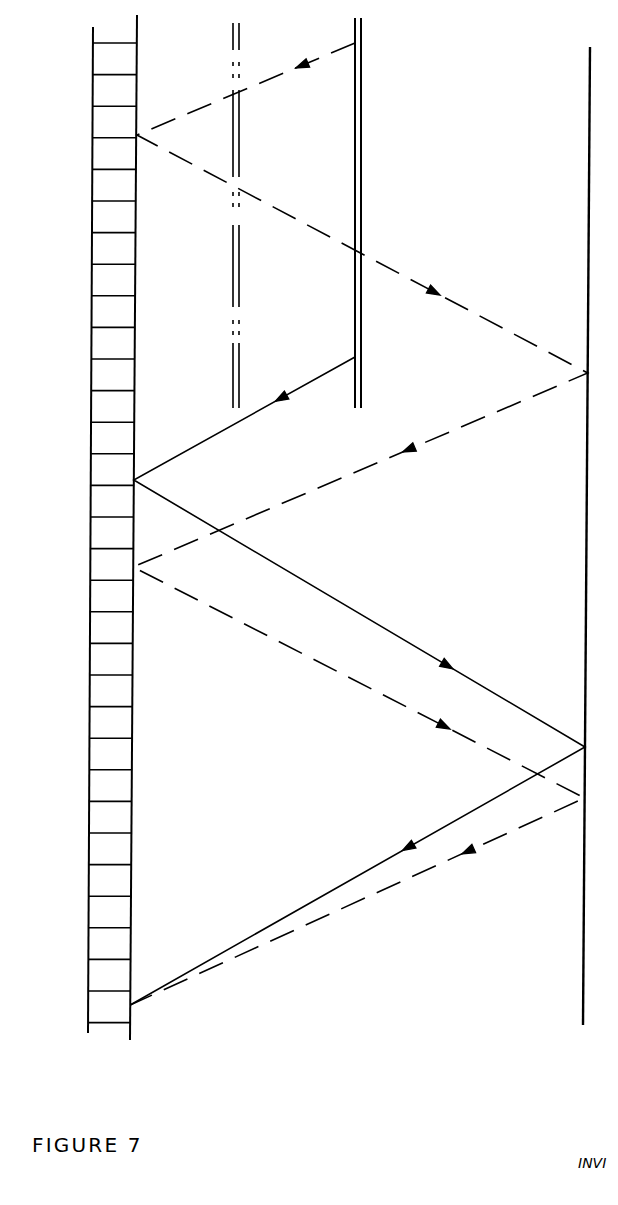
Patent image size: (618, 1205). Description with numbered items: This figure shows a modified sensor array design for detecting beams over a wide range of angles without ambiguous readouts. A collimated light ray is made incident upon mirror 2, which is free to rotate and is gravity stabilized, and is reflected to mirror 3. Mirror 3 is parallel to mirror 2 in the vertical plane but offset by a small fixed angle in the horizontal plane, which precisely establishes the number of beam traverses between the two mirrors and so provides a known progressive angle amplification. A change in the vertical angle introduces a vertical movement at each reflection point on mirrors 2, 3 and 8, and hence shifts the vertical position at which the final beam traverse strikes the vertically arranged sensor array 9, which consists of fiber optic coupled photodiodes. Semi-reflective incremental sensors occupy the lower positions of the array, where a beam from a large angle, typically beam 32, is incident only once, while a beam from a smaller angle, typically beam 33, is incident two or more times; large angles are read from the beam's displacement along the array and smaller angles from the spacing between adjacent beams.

The mirror 2 is at (239, 135).
The mirror 3 is at (355, 131).
The mirror 8 is at (588, 212).
The sensor array 9 is at (134, 725).
The beam 32 is at (327, 892).
The beam 33 is at (263, 632).